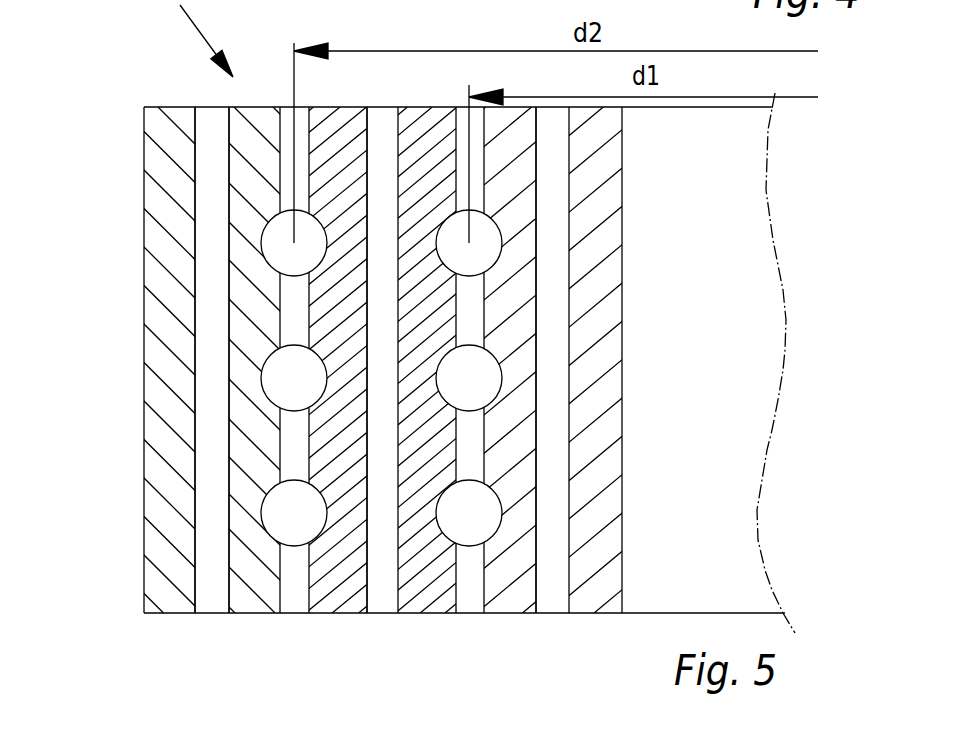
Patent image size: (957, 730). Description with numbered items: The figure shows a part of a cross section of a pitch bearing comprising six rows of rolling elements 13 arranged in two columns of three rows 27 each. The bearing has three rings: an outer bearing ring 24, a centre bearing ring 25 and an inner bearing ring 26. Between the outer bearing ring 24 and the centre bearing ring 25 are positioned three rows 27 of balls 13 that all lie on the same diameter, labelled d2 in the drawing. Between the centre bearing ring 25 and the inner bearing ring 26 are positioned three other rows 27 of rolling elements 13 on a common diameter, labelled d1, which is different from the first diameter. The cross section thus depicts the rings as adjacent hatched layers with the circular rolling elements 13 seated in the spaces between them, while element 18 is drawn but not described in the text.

The outer bearing ring 24 is at (175, 184).
The rows of rolling elements 27 is at (261, 250).
The rolling elements 13 is at (295, 380).
The gap layer 18 is at (213, 538).
The centre bearing ring 25 is at (340, 575).
The inner bearing ring 26 is at (510, 592).